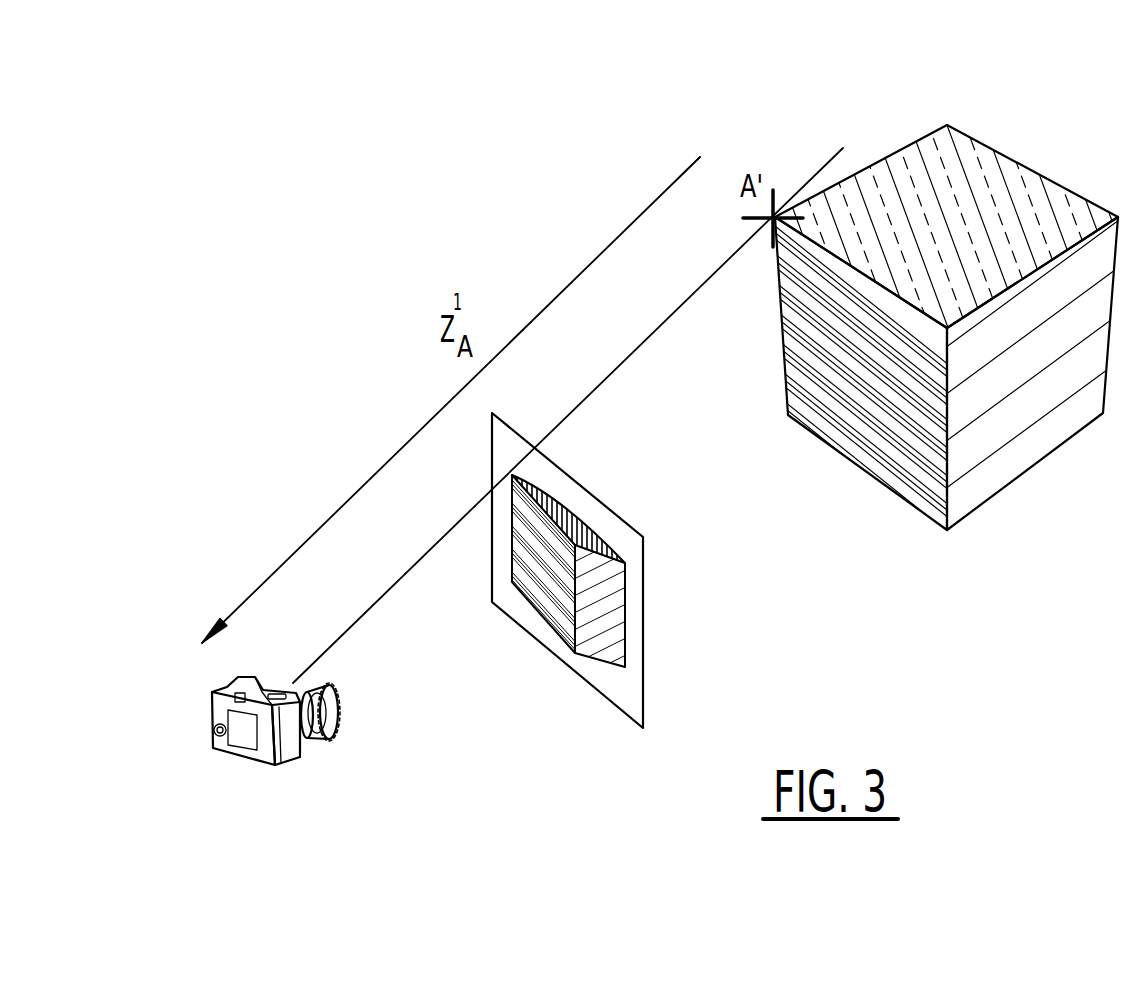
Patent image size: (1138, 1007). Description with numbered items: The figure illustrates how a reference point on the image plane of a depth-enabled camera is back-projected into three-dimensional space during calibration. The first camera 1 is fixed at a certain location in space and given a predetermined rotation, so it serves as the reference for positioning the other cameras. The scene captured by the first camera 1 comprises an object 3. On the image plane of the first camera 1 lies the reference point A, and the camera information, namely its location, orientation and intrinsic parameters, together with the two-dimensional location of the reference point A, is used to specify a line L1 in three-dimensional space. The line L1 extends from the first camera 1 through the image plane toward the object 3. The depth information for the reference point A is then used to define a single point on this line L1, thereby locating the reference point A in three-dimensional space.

The first camera 1 is at (245, 735).
The object 3 is at (1007, 175).
The reference point A is at (567, 570).
The line L1 is at (568, 415).